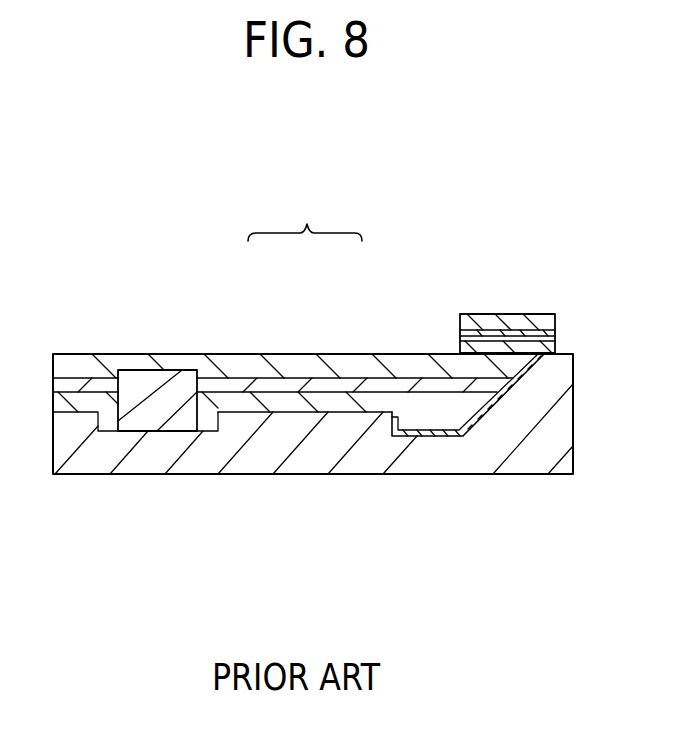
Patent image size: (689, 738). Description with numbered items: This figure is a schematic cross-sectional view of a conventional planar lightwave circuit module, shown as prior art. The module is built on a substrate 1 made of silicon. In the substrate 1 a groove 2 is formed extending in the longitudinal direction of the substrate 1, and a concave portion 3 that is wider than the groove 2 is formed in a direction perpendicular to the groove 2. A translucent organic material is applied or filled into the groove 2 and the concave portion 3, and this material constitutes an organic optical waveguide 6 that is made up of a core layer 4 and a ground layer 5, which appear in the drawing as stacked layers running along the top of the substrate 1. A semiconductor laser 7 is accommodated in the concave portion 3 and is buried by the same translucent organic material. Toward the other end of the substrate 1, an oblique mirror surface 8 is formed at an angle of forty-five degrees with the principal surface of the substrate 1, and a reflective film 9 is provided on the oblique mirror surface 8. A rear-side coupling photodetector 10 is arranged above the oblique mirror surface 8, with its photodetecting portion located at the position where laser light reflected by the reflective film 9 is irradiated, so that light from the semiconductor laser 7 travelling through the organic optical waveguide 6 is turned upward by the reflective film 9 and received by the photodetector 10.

The substrate 1 is at (197, 458).
The groove 2 is at (235, 403).
The concave portion 3 is at (100, 418).
The core layer 4 is at (290, 383).
The ground layer 5 is at (362, 365).
The organic optical waveguide 6 is at (305, 210).
The semiconductor laser 7 is at (140, 383).
The oblique mirror surface 8 is at (488, 373).
The reflective film 9 is at (461, 414).
The rear-side coupling photodetector 10 is at (508, 320).